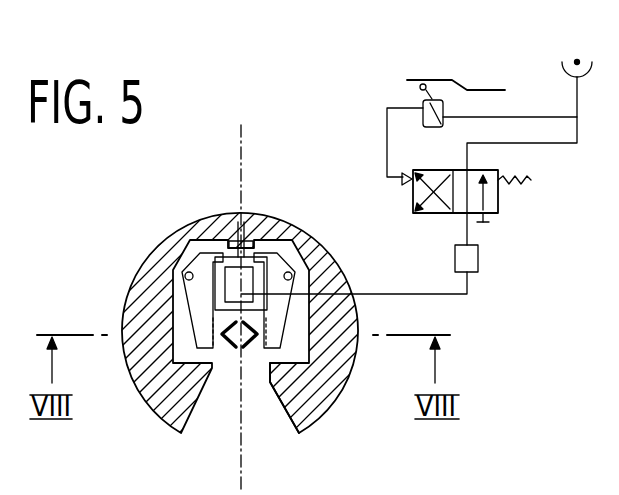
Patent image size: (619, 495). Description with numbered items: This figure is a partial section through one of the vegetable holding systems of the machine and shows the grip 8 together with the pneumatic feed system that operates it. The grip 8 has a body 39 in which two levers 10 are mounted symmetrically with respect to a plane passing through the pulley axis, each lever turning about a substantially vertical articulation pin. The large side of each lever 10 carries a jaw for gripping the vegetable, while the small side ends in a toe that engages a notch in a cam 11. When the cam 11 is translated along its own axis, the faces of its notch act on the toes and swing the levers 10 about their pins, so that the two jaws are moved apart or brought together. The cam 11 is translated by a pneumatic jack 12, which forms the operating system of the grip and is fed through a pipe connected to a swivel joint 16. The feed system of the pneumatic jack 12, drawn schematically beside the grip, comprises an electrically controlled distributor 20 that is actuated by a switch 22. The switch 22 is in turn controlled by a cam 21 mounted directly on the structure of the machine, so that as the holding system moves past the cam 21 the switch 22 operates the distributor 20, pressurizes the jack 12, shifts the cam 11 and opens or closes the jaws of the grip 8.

The grip 8 is at (124, 279).
The lever 10 is at (198, 262).
The cam 11 is at (245, 235).
The pneumatic jack 12 is at (226, 268).
The swivel joint 16 is at (478, 258).
The electrically controlled distributor 20 is at (500, 200).
The cam 21 is at (485, 88).
The switch 22 is at (432, 97).
The body 39 is at (313, 407).